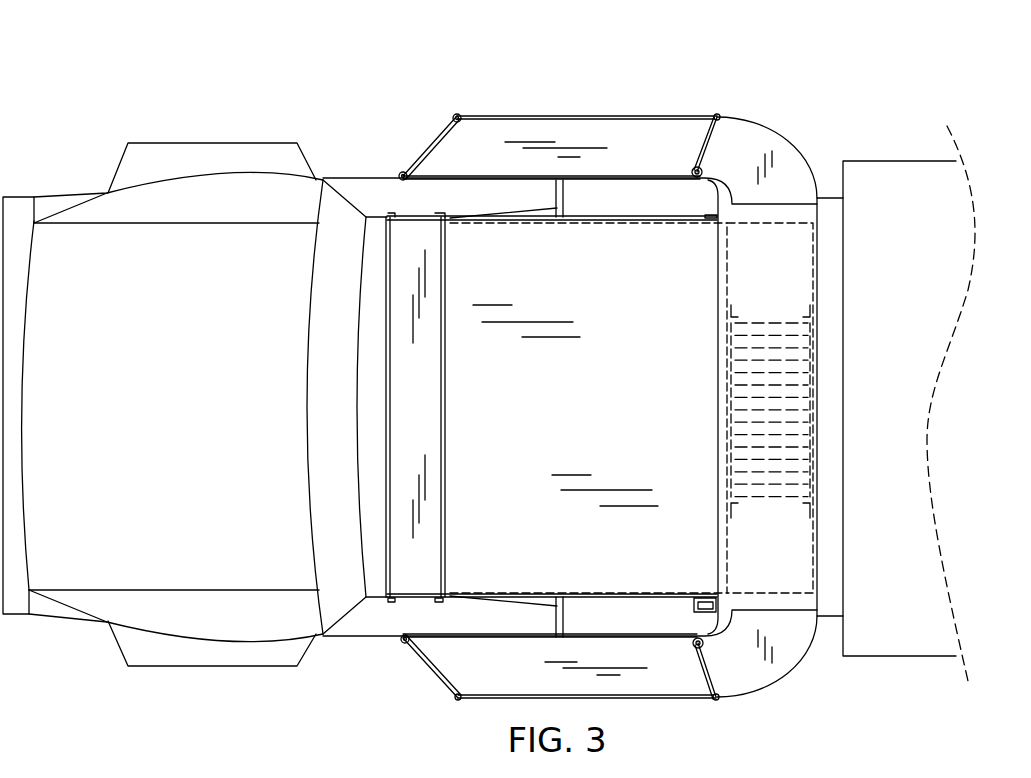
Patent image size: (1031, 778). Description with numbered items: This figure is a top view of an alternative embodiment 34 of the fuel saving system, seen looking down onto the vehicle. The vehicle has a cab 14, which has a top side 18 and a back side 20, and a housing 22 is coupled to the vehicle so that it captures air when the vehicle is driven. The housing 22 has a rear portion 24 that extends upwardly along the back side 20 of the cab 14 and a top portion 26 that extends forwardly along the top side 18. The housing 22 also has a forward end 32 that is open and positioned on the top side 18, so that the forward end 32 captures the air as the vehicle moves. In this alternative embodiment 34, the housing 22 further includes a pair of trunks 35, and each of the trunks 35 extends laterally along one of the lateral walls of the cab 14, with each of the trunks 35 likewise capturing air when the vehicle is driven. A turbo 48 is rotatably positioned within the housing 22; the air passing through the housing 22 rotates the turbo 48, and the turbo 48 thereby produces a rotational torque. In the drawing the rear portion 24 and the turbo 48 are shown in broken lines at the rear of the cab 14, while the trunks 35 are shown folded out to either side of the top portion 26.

The cab 14 is at (353, 180).
The top side 18 is at (378, 237).
The back side 20 is at (716, 560).
The housing 22 is at (787, 140).
The rear portion 24 is at (822, 248).
The top portion 26 is at (632, 203).
The forward end 32 is at (385, 550).
The alternative embodiment 34 is at (573, 394).
The trunks 35 is at (545, 116).
The turbo 48 is at (789, 497).